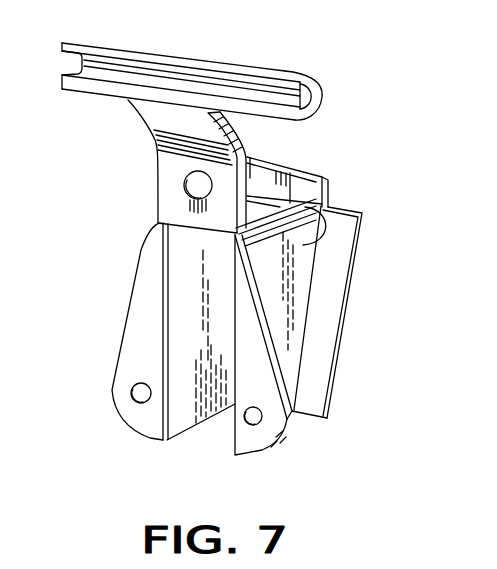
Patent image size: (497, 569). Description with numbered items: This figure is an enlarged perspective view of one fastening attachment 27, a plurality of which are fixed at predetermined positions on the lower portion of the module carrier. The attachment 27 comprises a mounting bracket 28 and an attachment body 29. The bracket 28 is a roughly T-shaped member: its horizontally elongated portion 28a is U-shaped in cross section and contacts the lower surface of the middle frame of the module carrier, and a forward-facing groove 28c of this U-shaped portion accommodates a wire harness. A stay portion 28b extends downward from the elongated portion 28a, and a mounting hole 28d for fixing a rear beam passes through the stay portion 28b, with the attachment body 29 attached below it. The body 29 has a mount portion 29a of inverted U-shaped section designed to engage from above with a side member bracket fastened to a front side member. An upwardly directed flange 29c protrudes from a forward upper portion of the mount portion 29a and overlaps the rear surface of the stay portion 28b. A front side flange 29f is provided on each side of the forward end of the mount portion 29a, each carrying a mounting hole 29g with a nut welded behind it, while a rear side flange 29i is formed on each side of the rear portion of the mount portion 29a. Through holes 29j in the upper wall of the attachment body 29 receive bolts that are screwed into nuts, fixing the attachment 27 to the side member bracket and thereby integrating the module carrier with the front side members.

The attachment 27 is at (148, 431).
The mounting bracket 28 is at (143, 134).
The horizontally elongated portion 28a is at (313, 86).
The stay portion 28b is at (186, 184).
The forward-facing groove 28c is at (166, 72).
The mounting hole 28d is at (198, 192).
The attachment body 29 is at (297, 277).
The mount portion 29a is at (182, 338).
The upwardly directed flange 29c is at (251, 184).
The front side flange 29f is at (140, 308).
The mounting hole 29g is at (131, 407).
The rear side flange 29i is at (330, 327).
The through hole 29j is at (320, 246).